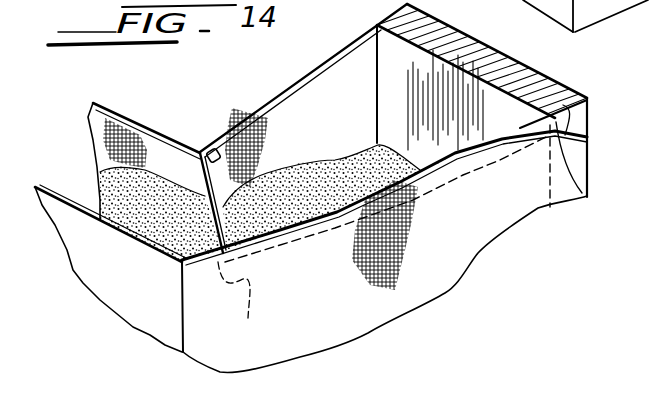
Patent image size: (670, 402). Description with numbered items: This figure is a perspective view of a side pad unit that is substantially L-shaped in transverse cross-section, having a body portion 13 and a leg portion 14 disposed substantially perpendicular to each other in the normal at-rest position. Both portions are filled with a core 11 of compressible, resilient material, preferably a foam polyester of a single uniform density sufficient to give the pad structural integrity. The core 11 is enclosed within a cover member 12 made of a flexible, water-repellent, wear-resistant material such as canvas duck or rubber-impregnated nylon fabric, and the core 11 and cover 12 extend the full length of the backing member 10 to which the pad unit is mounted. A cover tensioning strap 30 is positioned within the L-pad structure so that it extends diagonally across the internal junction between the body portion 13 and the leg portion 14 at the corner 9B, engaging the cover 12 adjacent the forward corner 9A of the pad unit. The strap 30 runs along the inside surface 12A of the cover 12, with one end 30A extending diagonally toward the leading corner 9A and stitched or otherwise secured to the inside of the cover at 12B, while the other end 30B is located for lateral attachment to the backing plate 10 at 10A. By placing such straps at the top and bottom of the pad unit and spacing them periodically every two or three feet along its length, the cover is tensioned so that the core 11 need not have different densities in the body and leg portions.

The forward corner 9A is at (579, 12).
The corner 9B is at (267, 100).
The backing member 10 is at (520, 68).
The attachment location on backing plate 10A is at (588, 138).
The core 11 is at (120, 220).
The cover member 12 is at (455, 258).
The inside surface of the cover 12A is at (580, 176).
The stitching location on cover 12B is at (190, 146).
The body portion 13 is at (300, 222).
The leg portion 14 is at (97, 280).
The cover tensioning strap 30 is at (462, 168).
The one end of the cover tensioning strap 30A is at (210, 145).
The other end of the cover tensioning strap 30B is at (577, 113).